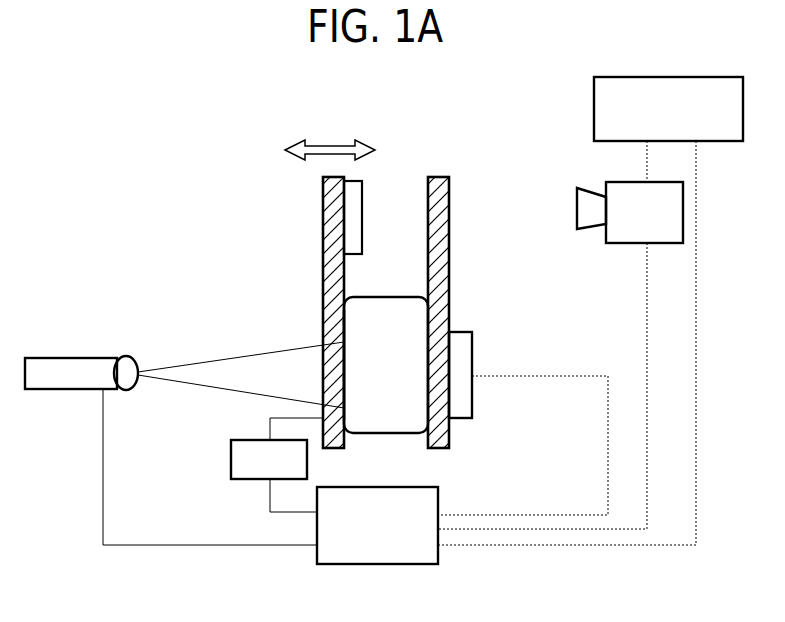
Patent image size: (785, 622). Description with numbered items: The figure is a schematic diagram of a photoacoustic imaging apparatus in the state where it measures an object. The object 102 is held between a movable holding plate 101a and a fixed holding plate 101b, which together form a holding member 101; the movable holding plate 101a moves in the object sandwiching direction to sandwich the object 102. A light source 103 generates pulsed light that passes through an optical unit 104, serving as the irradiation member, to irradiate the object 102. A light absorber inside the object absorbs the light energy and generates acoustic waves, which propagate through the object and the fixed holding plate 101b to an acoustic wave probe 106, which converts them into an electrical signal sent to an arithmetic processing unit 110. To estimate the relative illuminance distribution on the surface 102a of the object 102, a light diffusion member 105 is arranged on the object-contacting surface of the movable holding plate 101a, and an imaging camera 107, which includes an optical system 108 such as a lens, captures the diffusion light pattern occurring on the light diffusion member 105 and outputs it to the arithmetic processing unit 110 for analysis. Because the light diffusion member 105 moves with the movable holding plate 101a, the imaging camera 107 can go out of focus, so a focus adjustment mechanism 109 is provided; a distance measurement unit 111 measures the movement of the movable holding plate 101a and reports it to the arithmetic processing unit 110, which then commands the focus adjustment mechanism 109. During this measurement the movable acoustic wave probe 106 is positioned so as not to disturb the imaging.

The holding member 101 is at (383, 313).
The movable holding plate 101a is at (330, 276).
The fixed holding plate 101b is at (438, 222).
The object 102 is at (398, 430).
The surface of the object 102a is at (344, 382).
The light source 103 is at (55, 389).
The optical unit 104 is at (128, 360).
The light diffusion member 105 is at (362, 217).
The acoustic wave probe 106 is at (472, 352).
The imaging camera 107 is at (627, 243).
The optical system 108 is at (577, 192).
The focus adjustment mechanism 109 is at (594, 108).
The arithmetic processing unit 110 is at (378, 565).
The distance measurement unit 111 is at (231, 460).